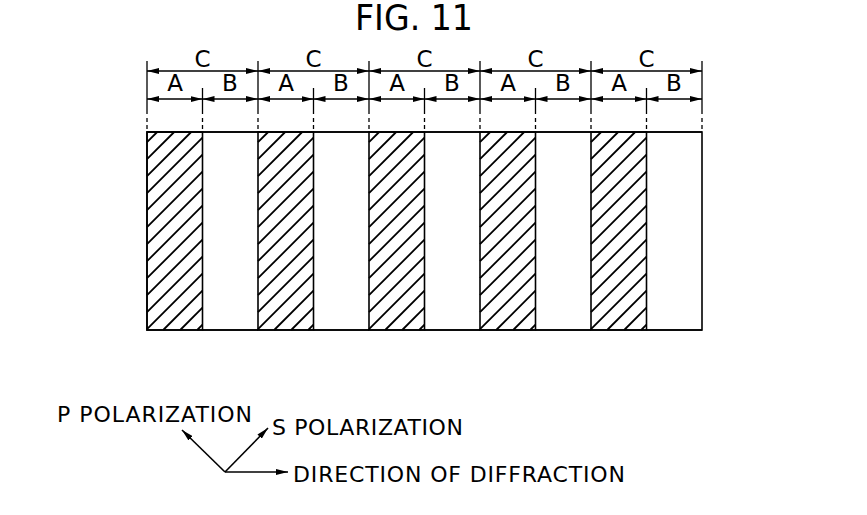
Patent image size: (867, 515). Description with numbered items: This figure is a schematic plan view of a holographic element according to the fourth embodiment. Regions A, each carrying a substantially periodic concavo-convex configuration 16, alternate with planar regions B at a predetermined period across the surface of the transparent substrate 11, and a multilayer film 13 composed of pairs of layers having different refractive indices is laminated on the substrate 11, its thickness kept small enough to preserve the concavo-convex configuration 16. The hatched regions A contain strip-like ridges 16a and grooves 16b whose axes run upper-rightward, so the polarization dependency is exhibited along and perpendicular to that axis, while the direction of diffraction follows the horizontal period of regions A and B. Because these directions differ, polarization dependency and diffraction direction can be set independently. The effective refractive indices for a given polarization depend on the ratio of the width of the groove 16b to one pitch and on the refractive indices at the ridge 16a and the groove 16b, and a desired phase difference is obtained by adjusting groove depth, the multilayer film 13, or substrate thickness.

The transparent substrate 11 is at (702, 300).
The multilayer film 13 is at (743, 276).
The concavo-convex configuration 16 is at (424, 261).
The ridge 16a is at (395, 318).
The groove 16b is at (412, 330).